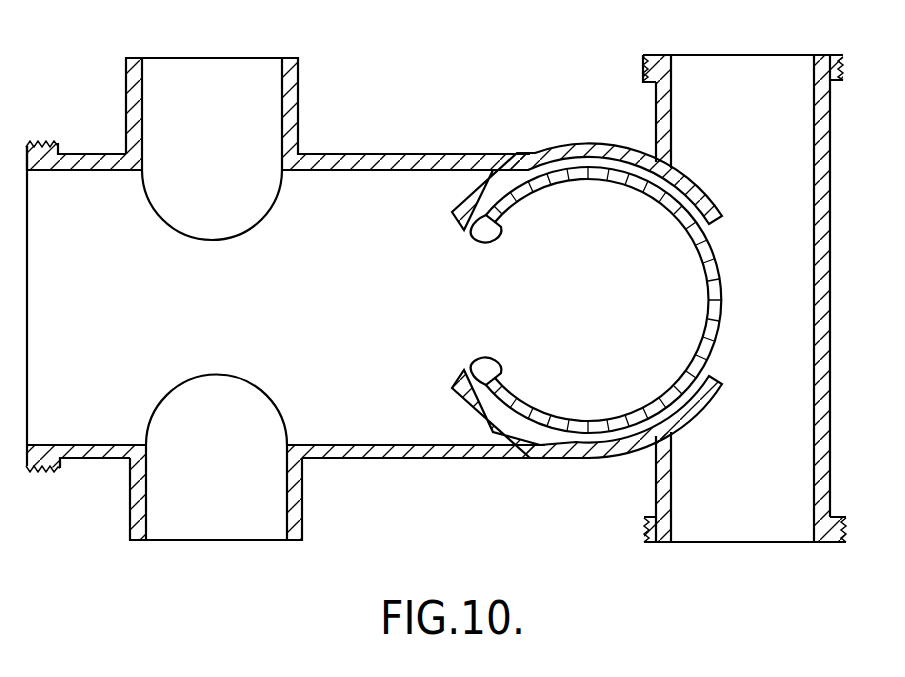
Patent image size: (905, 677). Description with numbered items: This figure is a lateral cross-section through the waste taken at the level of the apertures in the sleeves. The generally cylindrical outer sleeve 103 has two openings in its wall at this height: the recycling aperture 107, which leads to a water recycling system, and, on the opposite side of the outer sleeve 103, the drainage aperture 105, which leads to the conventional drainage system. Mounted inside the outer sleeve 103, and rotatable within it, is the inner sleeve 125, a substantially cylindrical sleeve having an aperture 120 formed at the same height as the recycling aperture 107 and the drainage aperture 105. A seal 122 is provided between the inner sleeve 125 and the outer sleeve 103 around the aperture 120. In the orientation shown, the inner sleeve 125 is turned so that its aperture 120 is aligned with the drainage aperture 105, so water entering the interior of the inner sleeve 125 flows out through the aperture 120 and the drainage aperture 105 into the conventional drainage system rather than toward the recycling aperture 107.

The outer sleeve 103 is at (599, 148).
The drainage aperture 105 is at (432, 298).
The recycling aperture 107 is at (740, 290).
The aperture 120 is at (478, 310).
The seal 122 is at (495, 236).
The inner sleeve 125 is at (708, 270).